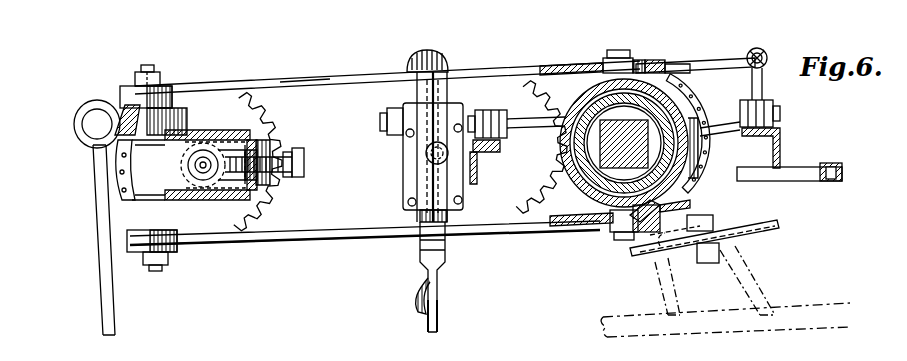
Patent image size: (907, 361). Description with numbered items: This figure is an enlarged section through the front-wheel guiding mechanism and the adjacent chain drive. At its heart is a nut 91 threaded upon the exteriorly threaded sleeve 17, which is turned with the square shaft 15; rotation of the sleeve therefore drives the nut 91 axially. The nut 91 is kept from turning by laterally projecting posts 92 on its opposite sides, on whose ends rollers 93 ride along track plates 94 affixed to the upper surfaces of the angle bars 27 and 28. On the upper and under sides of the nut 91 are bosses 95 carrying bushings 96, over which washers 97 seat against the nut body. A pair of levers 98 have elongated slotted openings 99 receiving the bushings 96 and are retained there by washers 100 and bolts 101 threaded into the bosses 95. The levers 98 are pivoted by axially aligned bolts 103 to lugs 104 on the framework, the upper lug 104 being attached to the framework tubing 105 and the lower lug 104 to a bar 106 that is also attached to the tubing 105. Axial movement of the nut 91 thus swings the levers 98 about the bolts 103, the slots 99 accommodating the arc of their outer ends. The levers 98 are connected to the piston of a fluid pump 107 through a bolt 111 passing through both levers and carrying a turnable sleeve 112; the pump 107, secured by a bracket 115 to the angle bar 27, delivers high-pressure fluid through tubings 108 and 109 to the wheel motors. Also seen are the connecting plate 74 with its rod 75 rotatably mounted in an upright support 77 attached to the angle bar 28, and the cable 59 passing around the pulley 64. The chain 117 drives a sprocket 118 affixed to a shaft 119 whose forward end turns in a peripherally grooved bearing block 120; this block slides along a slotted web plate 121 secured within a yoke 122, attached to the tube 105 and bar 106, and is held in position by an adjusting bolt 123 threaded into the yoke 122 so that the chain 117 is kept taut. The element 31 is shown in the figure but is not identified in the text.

The square shaft 15 is at (684, 88).
The exteriorly threaded sleeve 17 is at (698, 112).
The angle bar 27 is at (478, 178).
The angle bar 28 is at (780, 158).
The base support 31 is at (788, 181).
The cable 59 is at (779, 223).
The pulley 64 is at (760, 232).
The connecting plate 74 is at (705, 60).
The rod 75 is at (765, 52).
The upright support 77 is at (764, 82).
The nut 91 is at (672, 145).
The laterally projecting posts 92 is at (517, 118).
The rollers 93 is at (492, 110).
The track plates 94 is at (500, 148).
The bosses 95 is at (638, 60).
The bushings 96 is at (655, 60).
The washers 97 is at (553, 96).
The levers 98 is at (348, 78).
The slotted openings 99 is at (672, 64).
The washers 100 is at (603, 60).
The bolts 101 is at (615, 50).
The bolts 103 is at (148, 66).
The lugs 104 is at (120, 92).
The framework tubing 105 is at (74, 124).
The bar 106 is at (100, 232).
The fluid pump 107 is at (403, 163).
The tubing 108 is at (417, 306).
The tubing 109 is at (428, 320).
The bolt 111 is at (403, 188).
The sleeve 112 is at (420, 214).
The bracket 115 is at (475, 94).
The chain 117 is at (306, 80).
The sprocket 118 is at (272, 114).
The shaft 119 is at (228, 130).
The bearing block 120 is at (181, 163).
The slotted web plate 121 is at (240, 202).
The yoke 122 is at (200, 200).
The adjusting bolt 123 is at (304, 158).